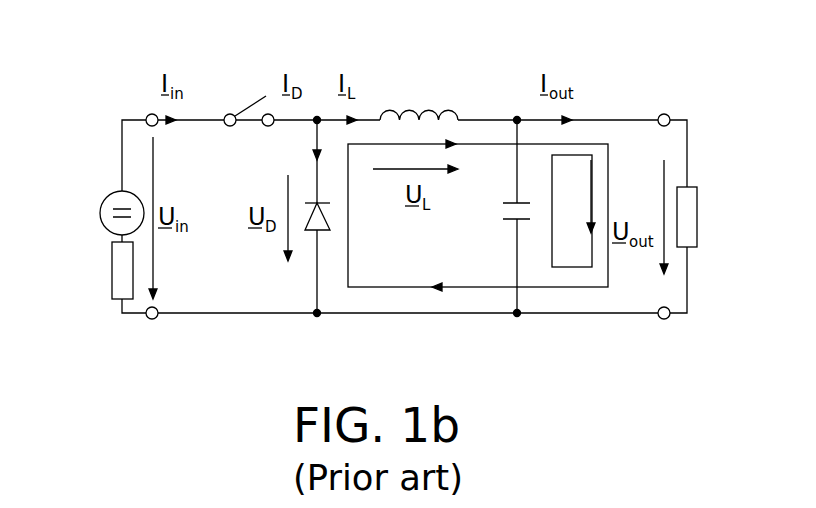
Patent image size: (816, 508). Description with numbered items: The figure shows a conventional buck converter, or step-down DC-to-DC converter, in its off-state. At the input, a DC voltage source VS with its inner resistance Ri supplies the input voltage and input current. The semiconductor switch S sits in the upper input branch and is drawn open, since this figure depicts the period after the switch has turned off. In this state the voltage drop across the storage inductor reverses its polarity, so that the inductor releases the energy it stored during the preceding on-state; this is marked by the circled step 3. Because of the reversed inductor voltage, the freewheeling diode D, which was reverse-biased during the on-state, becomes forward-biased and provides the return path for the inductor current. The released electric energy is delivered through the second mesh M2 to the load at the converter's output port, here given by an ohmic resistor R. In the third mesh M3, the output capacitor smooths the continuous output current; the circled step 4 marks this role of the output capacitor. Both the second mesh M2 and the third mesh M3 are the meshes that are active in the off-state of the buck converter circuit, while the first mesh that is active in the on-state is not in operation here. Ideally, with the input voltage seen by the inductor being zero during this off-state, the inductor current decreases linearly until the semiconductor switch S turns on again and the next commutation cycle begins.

The step of inductor releasing its stored energy 3 is at (426, 82).
The step of output capacitor 4 is at (522, 200).
The semiconductor switch S is at (245, 98).
The freewheeling diode D is at (341, 216).
The load R is at (698, 217).
The inner resistance of DC voltage source Ri is at (106, 270).
The DC voltage source VS is at (100, 213).
The second mesh M2 is at (460, 287).
The third mesh M3 is at (570, 267).